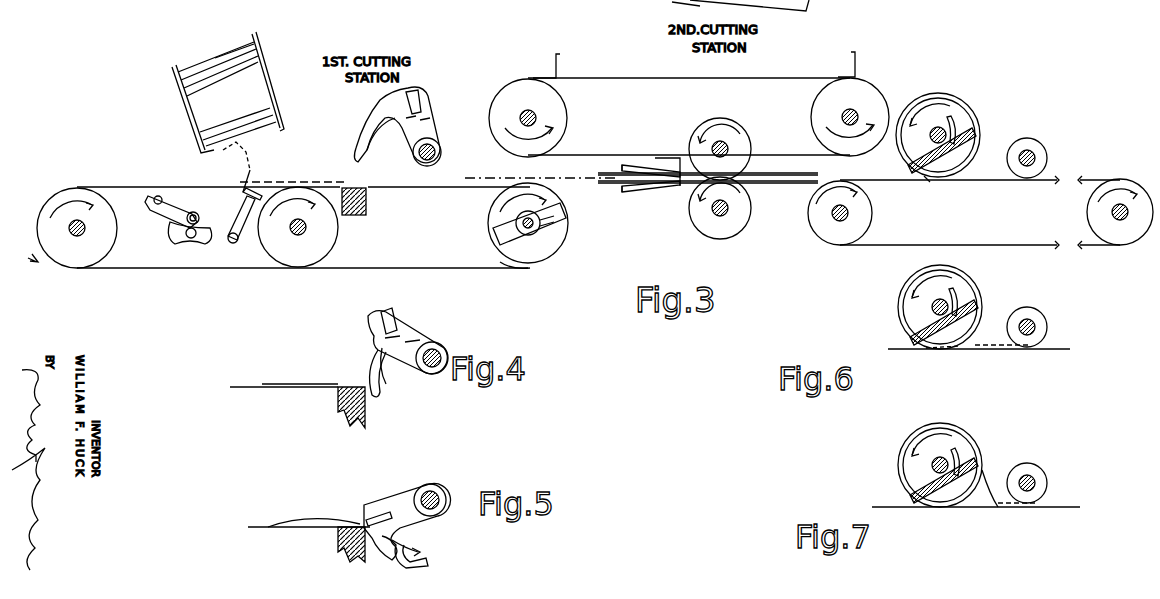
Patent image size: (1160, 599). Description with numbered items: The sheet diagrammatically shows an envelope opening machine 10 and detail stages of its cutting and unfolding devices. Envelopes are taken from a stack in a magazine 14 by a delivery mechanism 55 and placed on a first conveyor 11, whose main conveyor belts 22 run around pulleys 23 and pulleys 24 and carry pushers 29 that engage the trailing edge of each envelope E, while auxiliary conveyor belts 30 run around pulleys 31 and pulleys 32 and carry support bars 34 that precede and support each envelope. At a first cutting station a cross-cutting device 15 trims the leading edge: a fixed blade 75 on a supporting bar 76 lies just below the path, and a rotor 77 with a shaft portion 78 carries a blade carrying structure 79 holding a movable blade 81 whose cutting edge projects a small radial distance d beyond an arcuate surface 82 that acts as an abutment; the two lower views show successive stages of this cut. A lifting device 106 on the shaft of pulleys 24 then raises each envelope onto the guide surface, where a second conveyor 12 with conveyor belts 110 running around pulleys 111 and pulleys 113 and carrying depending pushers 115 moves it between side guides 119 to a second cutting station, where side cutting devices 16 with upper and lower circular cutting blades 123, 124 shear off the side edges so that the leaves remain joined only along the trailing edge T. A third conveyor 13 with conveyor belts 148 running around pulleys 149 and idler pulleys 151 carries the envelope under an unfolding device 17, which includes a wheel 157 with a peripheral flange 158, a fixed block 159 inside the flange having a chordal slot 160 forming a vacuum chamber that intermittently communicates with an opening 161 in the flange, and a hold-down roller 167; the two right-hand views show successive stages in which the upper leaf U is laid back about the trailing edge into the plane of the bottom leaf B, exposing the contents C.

In FIG. 3, the envelope opening machine 10 is at (616, 46).
In FIG. 3, the first conveyor 11 is at (105, 272).
In FIG. 3, the second conveyor 12 is at (614, 72).
In FIG. 3, the third conveyor 13 is at (1000, 250).
In FIG. 6, the third conveyor 13 is at (900, 360).
In FIG. 7, the third conveyor 13 is at (916, 512).
In FIG. 3, the magazine 14 is at (176, 98).
In FIG. 3, the cross-cutting device 15 is at (440, 102).
In FIG. 3, the side cutting devices 16 is at (690, 192).
In FIG. 3, the unfolding device 17 is at (978, 96).
In FIG. 3, the main conveyor belts 22 is at (143, 186).
In FIG. 3, the pulleys 23 is at (116, 238).
In FIG. 3, the pulleys 24 is at (499, 223).
In FIG. 3, the pushers 29 is at (240, 178).
In FIG. 4, the pushers 29 is at (262, 385).
In FIG. 5, the pushers 29 is at (272, 525).
In FIG. 3, the auxiliary conveyor belts 30 is at (417, 190).
In FIG. 3, the pulleys 31 is at (494, 216).
In FIG. 3, the pulleys 32 is at (326, 232).
In FIG. 3, the support bars 34 is at (522, 268).
In FIG. 3, the delivery mechanism 55 is at (248, 240).
In FIG. 3, the fixed blade 75 is at (344, 188).
In FIG. 4, the fixed blade 75 is at (355, 386).
In FIG. 3, the supporting bar 76 is at (366, 204).
In FIG. 4, the supporting bar 76 is at (365, 410).
In FIG. 5, the supporting bar 76 is at (351, 544).
In FIG. 3, the rotor 77 is at (437, 114).
In FIG. 4, the rotor 77 is at (420, 324).
In FIG. 5, the rotor 77 is at (425, 472).
In FIG. 3, the shaft portion 78 is at (442, 148).
In FIG. 3, the blade carrying structure 79 is at (408, 128).
In FIG. 3, the movable blade 81 is at (413, 102).
In FIG. 4, the movable blade 81 is at (390, 312).
In FIG. 4, the arcuate surface 82 is at (366, 348).
In FIG. 3, the lifting device 106 is at (552, 236).
In FIG. 3, the conveyor belts 110 is at (680, 78).
In FIG. 3, the pulleys 111 is at (556, 108).
In FIG. 3, the pulleys 113 is at (863, 94).
In FIG. 3, the pushers 115 is at (548, 74).
In FIG. 3, the side guides 119 is at (660, 186).
In FIG. 3, the upper circular cutting blade 123 is at (750, 134).
In FIG. 3, the lower circular cutting blade 124 is at (732, 234).
In FIG. 3, the conveyor belts 148 is at (996, 226).
In FIG. 3, the pulleys 149 is at (862, 206).
In FIG. 3, the idler pulleys 151 is at (1124, 230).
In FIG. 3, the wheel 157 is at (956, 118).
In FIG. 6, the wheel 157 is at (904, 324).
In FIG. 7, the wheel 157 is at (946, 442).
In FIG. 3, the peripheral flange 158 is at (936, 93).
In FIG. 6, the peripheral flange 158 is at (940, 266).
In FIG. 7, the peripheral flange 158 is at (956, 430).
In FIG. 3, the block 159 is at (976, 130).
In FIG. 6, the block 159 is at (944, 322).
In FIG. 7, the block 159 is at (906, 472).
In FIG. 3, the chordal slot 160 is at (968, 164).
In FIG. 6, the chordal slot 160 is at (962, 334).
In FIG. 7, the chordal slot 160 is at (952, 490).
In FIG. 3, the opening 161 is at (928, 180).
In FIG. 6, the opening 161 is at (958, 348).
In FIG. 7, the opening 161 is at (984, 476).
In FIG. 6, the hold-down roller 167 is at (1046, 318).
In FIG. 7, the hold-down roller 167 is at (1044, 470).
In FIG. 3, the envelope E is at (912, 176).
In FIG. 4, the envelope E is at (294, 383).
In FIG. 5, the envelope E is at (328, 522).
In FIG. 3, the trailing edge T is at (690, 7).
In FIG. 6, the upper leaf U is at (978, 324).
In FIG. 7, the upper leaf U is at (984, 474).
In FIG. 6, the contents C is at (984, 348).
In FIG. 6, the bottom leaf B is at (998, 349).
In FIG. 7, the bottom leaf B is at (1008, 507).
In FIG. 4, the radial distance d is at (364, 326).